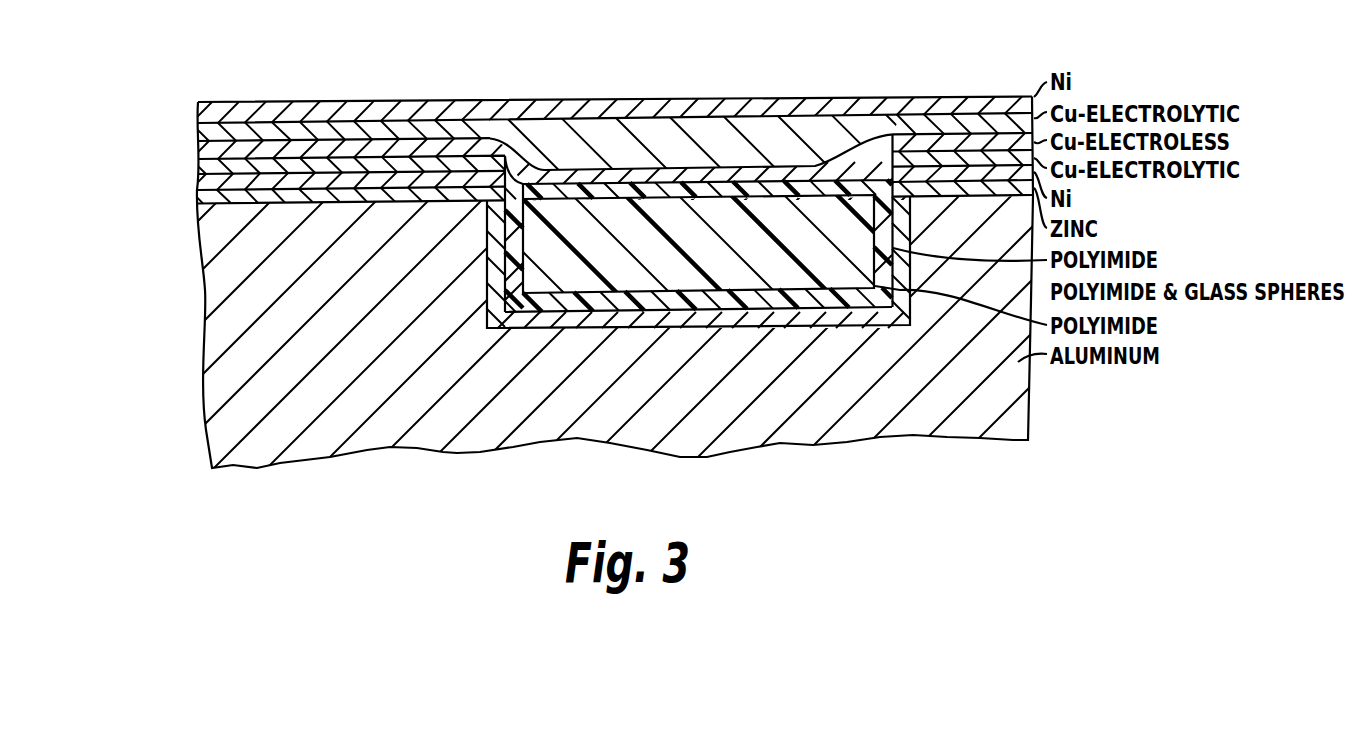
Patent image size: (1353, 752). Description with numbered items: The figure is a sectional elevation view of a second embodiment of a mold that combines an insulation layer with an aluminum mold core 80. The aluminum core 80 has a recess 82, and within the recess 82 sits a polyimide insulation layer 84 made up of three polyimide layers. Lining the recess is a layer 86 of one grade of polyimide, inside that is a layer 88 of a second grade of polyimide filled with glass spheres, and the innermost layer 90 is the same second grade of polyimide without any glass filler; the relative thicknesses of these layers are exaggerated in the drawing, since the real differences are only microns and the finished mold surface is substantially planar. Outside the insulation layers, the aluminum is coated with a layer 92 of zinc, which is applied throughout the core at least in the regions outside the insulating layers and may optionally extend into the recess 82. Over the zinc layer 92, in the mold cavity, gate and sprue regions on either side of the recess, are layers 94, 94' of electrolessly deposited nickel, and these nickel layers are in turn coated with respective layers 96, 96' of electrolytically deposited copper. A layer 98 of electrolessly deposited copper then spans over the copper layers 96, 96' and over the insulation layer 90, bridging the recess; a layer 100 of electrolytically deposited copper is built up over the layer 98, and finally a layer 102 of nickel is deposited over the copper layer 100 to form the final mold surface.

The aluminum core 80 is at (880, 428).
The recess 82 is at (722, 313).
The polyimide insulation layer 84 is at (492, 288).
The layer of L-20N polyimide 86 is at (607, 307).
The layer of L-30N polyimide filled with glass spheres 88 is at (507, 255).
The layer of L-30N polyimide without glass filler 90 is at (603, 187).
The layer of zinc 92 is at (198, 202).
The layer of nickel 94 is at (607, 167).
The layer of electrolessly deposited nickel 94' is at (621, 122).
The layer of electrolytically deposited copper 96 is at (607, 150).
The layer of electrolytically deposited copper 96' is at (621, 122).
The layer of electrolessly deposited copper 98 is at (198, 143).
The layer of electrolytically deposited copper 100 is at (197, 125).
The layer of nickel 102 is at (717, 107).